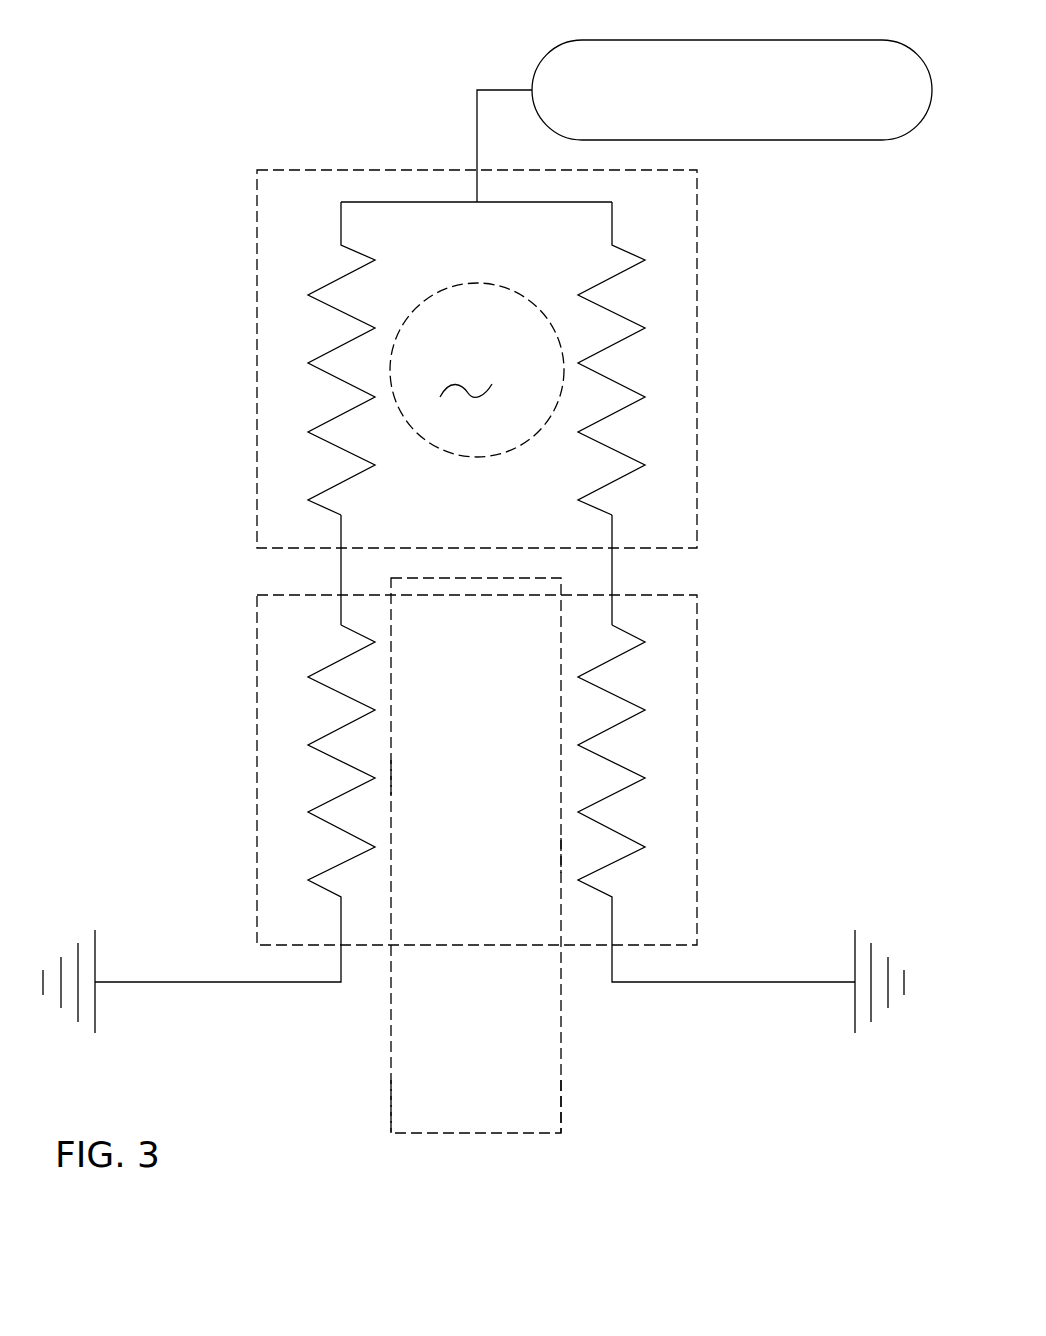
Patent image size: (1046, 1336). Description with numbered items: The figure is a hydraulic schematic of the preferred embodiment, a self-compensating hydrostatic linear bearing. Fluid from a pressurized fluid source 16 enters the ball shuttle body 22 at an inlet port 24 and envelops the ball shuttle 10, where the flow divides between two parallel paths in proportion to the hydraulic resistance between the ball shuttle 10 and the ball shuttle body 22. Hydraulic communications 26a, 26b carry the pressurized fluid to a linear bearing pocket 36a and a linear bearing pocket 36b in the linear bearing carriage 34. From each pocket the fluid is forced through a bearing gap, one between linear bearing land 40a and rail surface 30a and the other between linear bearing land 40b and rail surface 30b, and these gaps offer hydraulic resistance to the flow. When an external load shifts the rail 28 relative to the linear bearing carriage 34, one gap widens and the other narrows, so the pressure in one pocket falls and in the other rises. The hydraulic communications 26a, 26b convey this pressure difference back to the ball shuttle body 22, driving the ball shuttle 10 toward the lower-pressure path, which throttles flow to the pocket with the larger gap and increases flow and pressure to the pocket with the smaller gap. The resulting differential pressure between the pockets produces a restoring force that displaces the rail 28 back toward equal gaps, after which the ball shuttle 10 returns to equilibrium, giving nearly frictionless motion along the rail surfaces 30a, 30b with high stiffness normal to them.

The pressurized fluid source 16 is at (552, 52).
The inlet port 24 is at (473, 170).
The ball shuttle body 22 is at (257, 356).
The ball shuttle 10 is at (477, 370).
The hydraulic communication 26a is at (612, 570).
The hydraulic communication 26b is at (340, 572).
The linear bearing carriage 34 is at (257, 882).
The linear bearing pocket 36a is at (645, 706).
The linear bearing pocket 36b is at (308, 745).
The rail 28 is at (467, 1133).
The rail surface 30a is at (580, 1098).
The rail surface 30b is at (372, 1116).
The linear bearing land 40a is at (542, 855).
The linear bearing land 40b is at (410, 777).